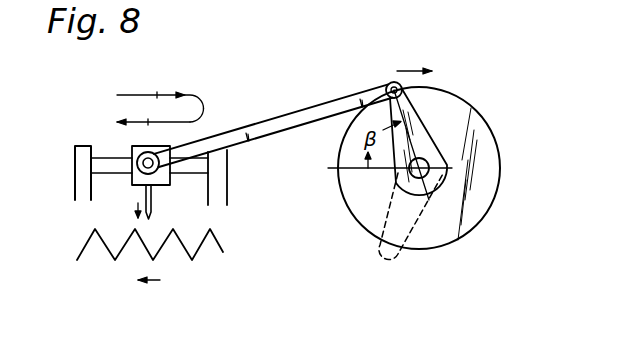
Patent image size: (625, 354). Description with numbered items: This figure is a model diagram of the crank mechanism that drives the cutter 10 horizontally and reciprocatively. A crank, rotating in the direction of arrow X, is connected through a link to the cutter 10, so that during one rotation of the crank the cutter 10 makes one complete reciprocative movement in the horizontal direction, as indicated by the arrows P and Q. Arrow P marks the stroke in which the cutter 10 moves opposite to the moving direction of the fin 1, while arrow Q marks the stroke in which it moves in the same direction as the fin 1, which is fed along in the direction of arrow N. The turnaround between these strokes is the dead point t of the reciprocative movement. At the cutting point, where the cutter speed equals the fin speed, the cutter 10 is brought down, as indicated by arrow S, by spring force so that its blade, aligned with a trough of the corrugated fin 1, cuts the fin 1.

The cutter 10 is at (153, 195).
The corrugated fin 1 is at (223, 252).
The arrow P is at (160, 96).
The arrow Q is at (141, 130).
The dead point t is at (208, 112).
The arrow S is at (130, 214).
The arrow N is at (136, 279).
The arrow X is at (414, 61).